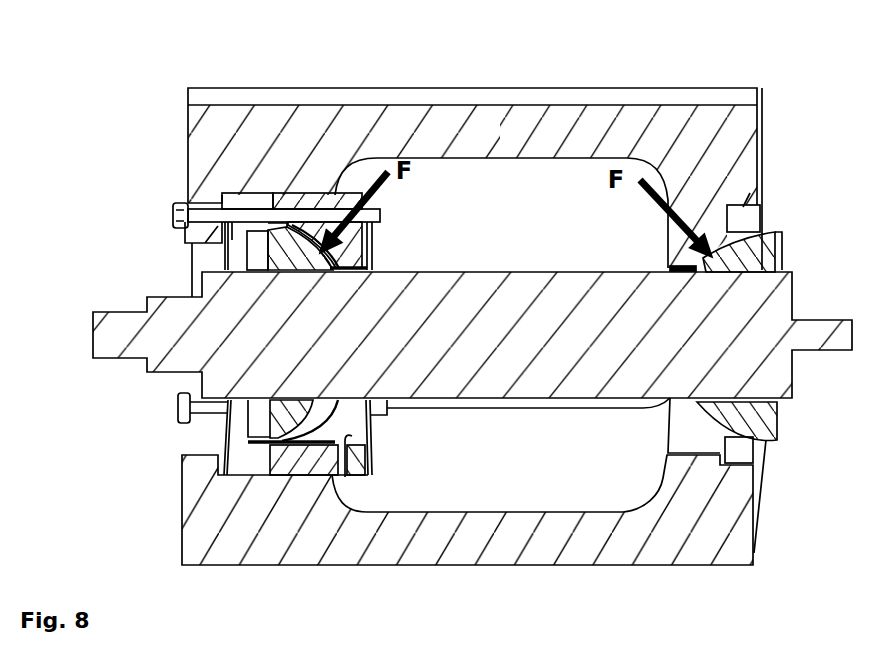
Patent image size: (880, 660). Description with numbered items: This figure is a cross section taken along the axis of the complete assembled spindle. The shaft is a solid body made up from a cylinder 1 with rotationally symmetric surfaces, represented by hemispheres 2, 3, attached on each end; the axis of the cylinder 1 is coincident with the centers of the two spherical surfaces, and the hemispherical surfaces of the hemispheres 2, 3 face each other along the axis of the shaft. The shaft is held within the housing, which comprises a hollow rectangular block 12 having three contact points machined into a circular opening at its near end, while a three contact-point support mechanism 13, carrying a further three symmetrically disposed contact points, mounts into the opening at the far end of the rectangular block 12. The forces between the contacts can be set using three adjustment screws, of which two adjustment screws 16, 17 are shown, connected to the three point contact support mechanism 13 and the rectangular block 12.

The cylinder 1 is at (622, 293).
The hemisphere 2 is at (755, 421).
The hemisphere 3 is at (279, 413).
The hollow rectangular block 12 is at (720, 153).
The three contact-point support mechanism 13 is at (330, 454).
The adjustment screw 16 is at (187, 205).
The adjustment screw 17 is at (181, 402).